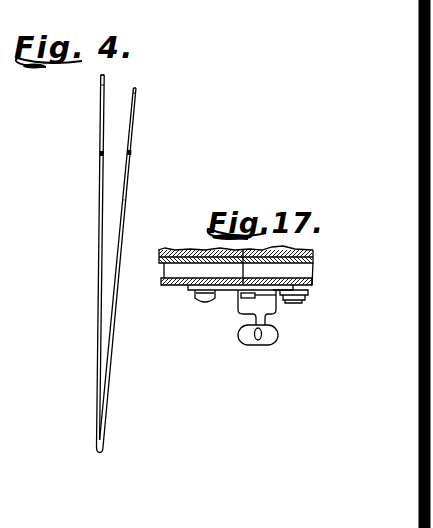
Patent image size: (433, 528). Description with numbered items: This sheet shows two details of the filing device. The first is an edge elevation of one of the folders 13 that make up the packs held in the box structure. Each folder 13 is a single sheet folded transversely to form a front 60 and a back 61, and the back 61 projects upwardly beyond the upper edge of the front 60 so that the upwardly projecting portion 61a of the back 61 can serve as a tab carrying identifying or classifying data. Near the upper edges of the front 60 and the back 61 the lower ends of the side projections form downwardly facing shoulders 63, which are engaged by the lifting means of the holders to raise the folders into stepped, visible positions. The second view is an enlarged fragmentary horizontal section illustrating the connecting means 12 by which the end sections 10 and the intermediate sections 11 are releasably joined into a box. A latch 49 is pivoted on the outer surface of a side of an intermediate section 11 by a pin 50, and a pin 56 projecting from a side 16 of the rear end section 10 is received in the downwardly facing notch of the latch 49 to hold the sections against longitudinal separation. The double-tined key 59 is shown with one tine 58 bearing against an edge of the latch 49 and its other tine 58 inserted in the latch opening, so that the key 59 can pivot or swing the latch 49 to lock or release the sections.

In FIG. 17, the end section 10 is at (188, 246).
In FIG. 17, the intermediate section 11 is at (306, 292).
In FIG. 17, the connecting means 12 is at (225, 297).
In FIG. 4, the folder 13 is at (128, 200).
In FIG. 17, the side 16 is at (172, 286).
In FIG. 17, the latch 49 is at (245, 297).
In FIG. 17, the pin 50 is at (286, 304).
In FIG. 17, the pin 56 is at (205, 304).
In FIG. 17, the tine 58 is at (281, 286).
In FIG. 17, the key 59 is at (259, 341).
In FIG. 4, the front 60 is at (132, 129).
In FIG. 4, the back 61 is at (100, 128).
In FIG. 4, the upwardly projecting portion 61a is at (103, 82).
In FIG. 4, the shoulder 63 is at (100, 154).